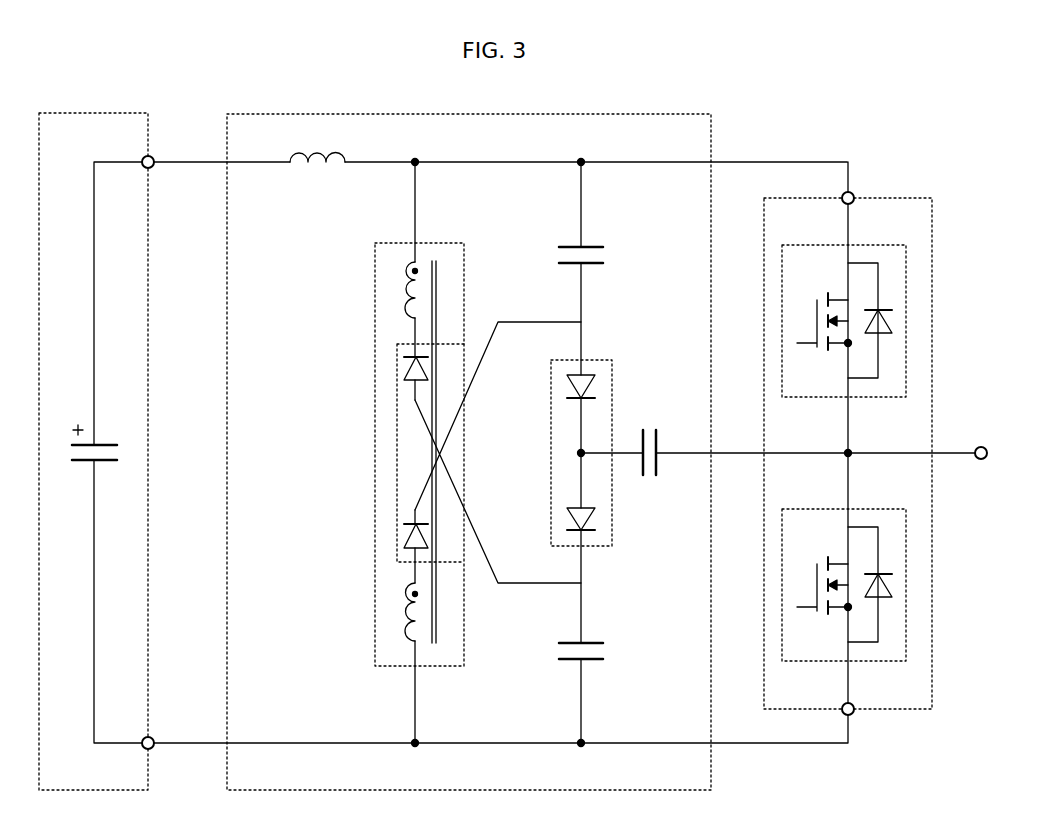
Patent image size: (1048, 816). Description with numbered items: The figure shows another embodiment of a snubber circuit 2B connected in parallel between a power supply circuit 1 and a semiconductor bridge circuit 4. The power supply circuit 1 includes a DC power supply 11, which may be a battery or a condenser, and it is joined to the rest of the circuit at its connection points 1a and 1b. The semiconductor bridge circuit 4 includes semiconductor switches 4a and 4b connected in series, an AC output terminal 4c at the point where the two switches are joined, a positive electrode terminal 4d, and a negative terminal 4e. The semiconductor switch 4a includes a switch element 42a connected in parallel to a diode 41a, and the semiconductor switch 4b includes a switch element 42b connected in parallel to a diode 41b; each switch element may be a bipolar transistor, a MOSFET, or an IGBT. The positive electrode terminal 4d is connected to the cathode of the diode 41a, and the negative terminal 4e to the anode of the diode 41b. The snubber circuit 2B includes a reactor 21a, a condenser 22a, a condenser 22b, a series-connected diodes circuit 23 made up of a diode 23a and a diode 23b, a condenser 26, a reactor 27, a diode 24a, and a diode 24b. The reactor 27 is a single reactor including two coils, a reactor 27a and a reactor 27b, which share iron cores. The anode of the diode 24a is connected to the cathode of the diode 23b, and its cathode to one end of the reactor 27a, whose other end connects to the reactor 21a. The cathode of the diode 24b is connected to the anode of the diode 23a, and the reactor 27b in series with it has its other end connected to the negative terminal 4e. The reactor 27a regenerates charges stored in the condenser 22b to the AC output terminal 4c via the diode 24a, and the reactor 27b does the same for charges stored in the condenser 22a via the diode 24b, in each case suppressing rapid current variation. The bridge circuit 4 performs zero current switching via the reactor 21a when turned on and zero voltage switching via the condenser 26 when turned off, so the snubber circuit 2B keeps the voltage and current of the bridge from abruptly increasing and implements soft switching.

The power supply circuit 1 is at (115, 113).
The positive terminal of power supply 1a is at (152, 168).
The negative terminal of power supply 1b is at (152, 737).
The DC power supply 11 is at (108, 443).
The snubber circuit 2B is at (468, 114).
The reactor 21a is at (320, 170).
The condenser 22a is at (593, 247).
The condenser 22b is at (593, 643).
The series-connected diodes circuit 23 is at (584, 435).
The diode 23a is at (590, 378).
The diode 23b is at (590, 517).
The diode 24a is at (404, 358).
The diode 24b is at (404, 526).
The condenser 26 is at (650, 430).
The reactor 27 is at (432, 454).
The reactor 27a is at (407, 288).
The reactor 27b is at (408, 612).
The semiconductor bridge circuit 4 is at (893, 198).
The semiconductor switch 4a is at (891, 330).
The semiconductor switch 4b is at (892, 594).
The AC output terminal 4c is at (985, 446).
The positive electrode terminal 4d is at (853, 191).
The negative terminal 4e is at (853, 716).
The diode 41a is at (892, 318).
The diode 41b is at (892, 582).
The switch element 42a is at (822, 350).
The switch element 42b is at (822, 614).